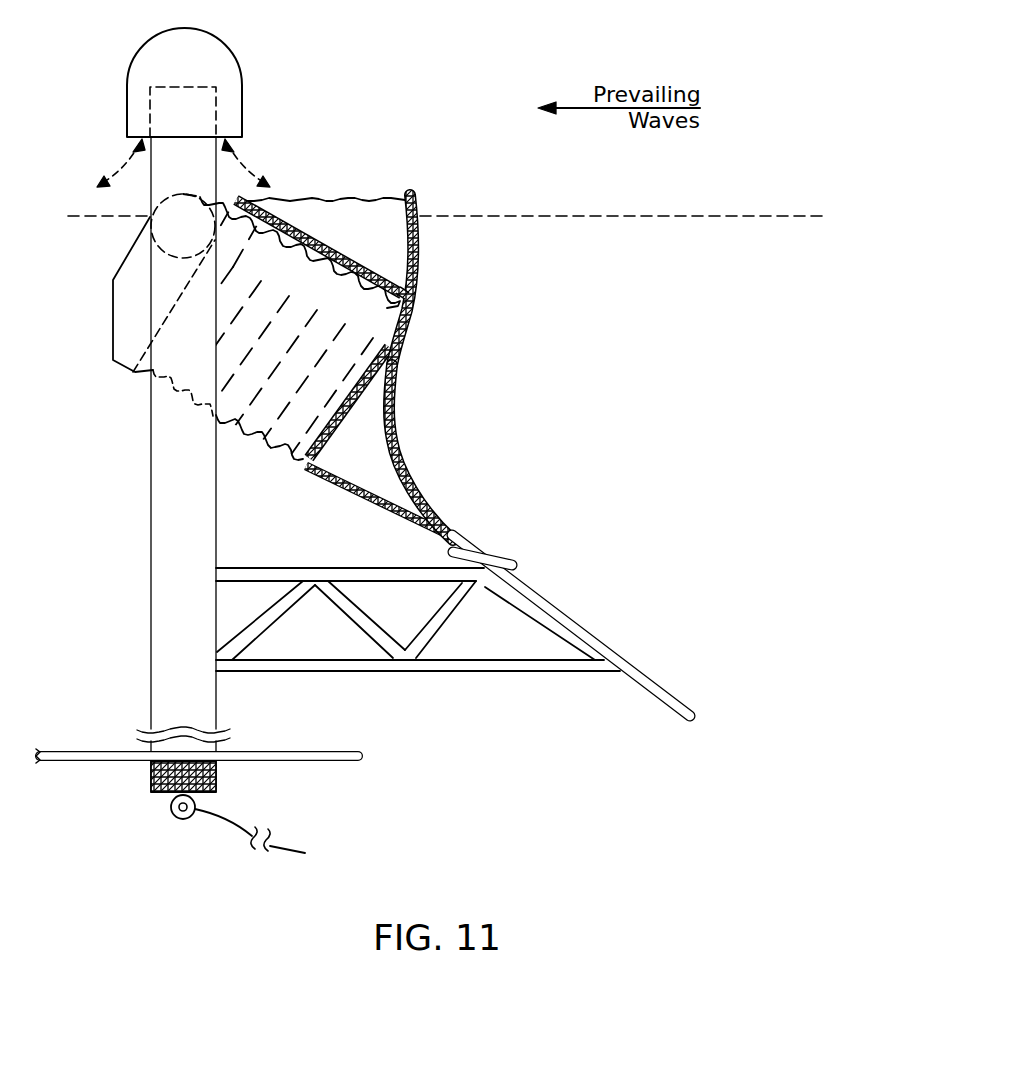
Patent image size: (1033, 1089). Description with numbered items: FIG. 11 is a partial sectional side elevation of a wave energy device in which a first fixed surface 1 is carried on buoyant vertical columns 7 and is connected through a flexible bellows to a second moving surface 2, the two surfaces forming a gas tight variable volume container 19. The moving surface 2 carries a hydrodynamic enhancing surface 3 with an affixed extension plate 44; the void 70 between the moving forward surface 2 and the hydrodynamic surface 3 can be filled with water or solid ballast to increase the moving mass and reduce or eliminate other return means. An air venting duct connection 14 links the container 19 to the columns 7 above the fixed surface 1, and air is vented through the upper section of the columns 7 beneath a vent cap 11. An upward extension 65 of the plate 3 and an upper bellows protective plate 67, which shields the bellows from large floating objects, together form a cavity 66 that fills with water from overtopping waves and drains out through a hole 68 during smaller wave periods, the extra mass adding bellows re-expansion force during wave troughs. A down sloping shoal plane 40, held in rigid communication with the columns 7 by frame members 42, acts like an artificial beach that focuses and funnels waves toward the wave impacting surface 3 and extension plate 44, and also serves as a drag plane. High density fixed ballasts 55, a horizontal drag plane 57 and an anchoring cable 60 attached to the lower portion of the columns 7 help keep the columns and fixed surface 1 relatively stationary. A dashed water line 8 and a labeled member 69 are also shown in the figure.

The first fixed surface 1 is at (140, 357).
The second moving surface 2 is at (362, 363).
The hydrodynamic enhancing surface 3 is at (413, 478).
The buoyant vertical columns 7 is at (148, 468).
The water line 8 is at (500, 214).
The vent cap 11 is at (220, 42).
The vent ducts 14 is at (160, 238).
The gas tight variable volume container 19 is at (268, 420).
The shoal plane 40 is at (580, 628).
The frame members 42 is at (360, 672).
The extension plate 44 is at (485, 550).
The high density fixed ballasts 55 is at (151, 780).
The horizontal drag plane 57 is at (345, 761).
The cable 60 is at (290, 850).
The upward extension 65 is at (420, 245).
The cavity 66 is at (370, 205).
The bellows protective plate 67 is at (291, 226).
The hole 68 is at (412, 284).
The lower bar 69 is at (356, 494).
The void 70 is at (372, 447).